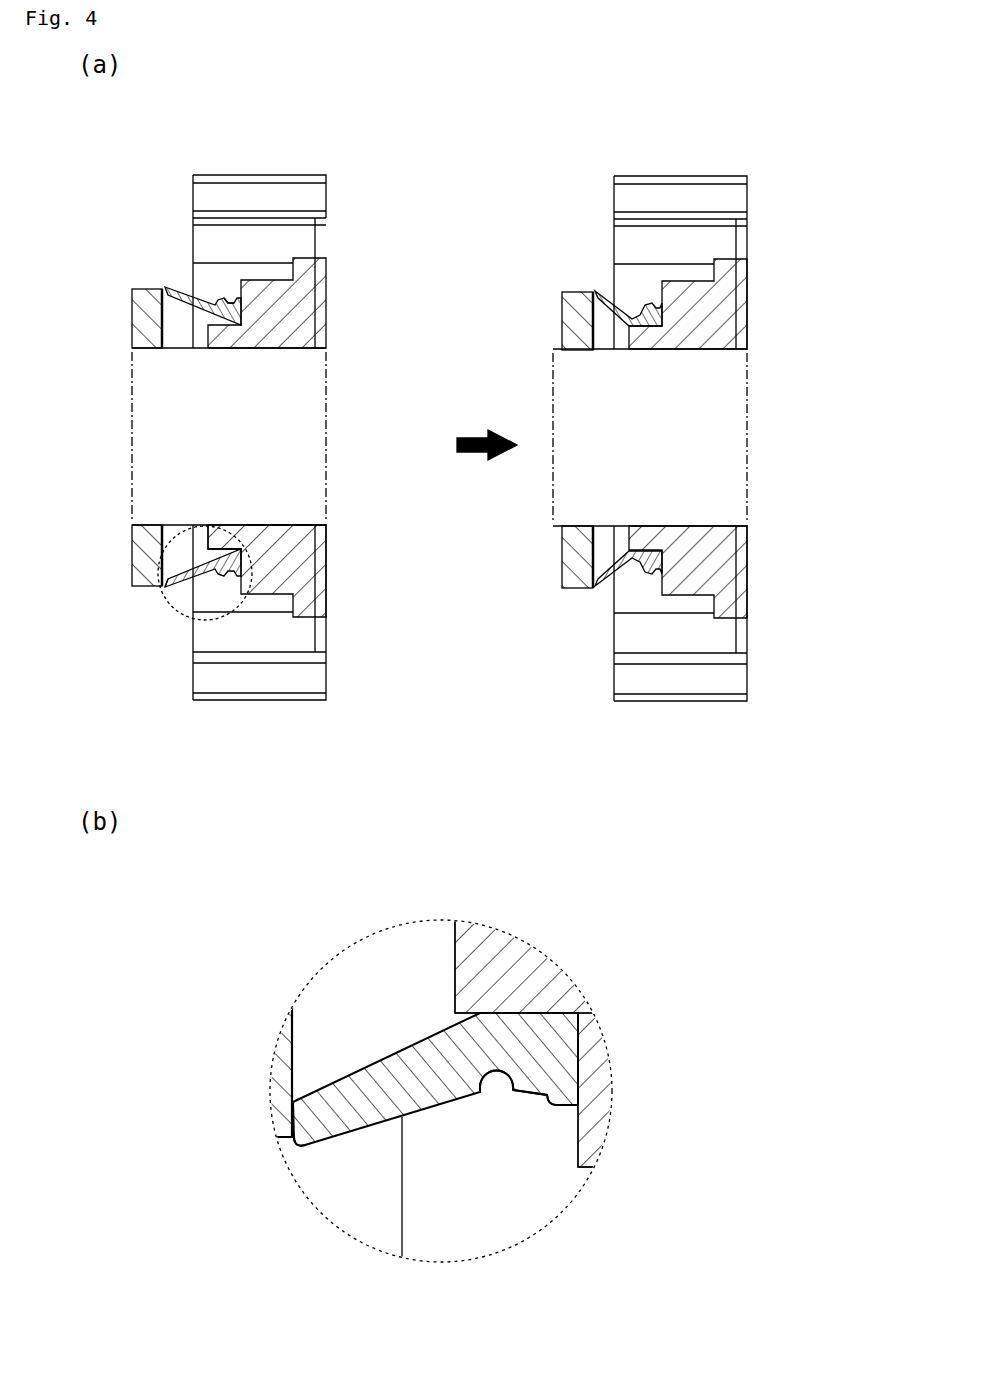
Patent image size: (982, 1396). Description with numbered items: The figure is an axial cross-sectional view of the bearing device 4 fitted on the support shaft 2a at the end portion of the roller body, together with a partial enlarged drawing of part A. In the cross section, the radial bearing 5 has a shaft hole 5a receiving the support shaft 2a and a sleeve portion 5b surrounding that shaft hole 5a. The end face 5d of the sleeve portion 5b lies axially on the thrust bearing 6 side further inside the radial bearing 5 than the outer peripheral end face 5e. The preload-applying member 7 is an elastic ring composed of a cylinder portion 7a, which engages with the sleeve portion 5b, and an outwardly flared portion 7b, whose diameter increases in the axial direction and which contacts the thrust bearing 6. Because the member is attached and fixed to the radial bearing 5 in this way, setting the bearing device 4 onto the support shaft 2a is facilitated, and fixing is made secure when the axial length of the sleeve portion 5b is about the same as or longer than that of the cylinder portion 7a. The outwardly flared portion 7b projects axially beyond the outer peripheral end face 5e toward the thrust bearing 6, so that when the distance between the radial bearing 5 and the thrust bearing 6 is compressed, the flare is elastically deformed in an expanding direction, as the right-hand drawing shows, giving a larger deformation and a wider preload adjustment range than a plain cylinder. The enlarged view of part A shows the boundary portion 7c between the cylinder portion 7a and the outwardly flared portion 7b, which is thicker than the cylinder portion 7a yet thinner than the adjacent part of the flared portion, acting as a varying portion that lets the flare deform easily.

The bearing device 4 is at (358, 176).
The radial bearing 5 is at (282, 318).
The shaft hole 5a is at (258, 525).
The sleeve portion 5b is at (215, 542).
The end face 5d is at (210, 548).
The outer peripheral end face 5e is at (193, 202).
The thrust bearing 6 is at (138, 555).
The preload-applying member 7 is at (180, 272).
The cylinder portion 7a is at (232, 573).
The outwardly flared portion 7b is at (168, 583).
The boundary portion 7c is at (202, 567).
The support shaft 2a is at (288, 415).
The part A is at (197, 600).